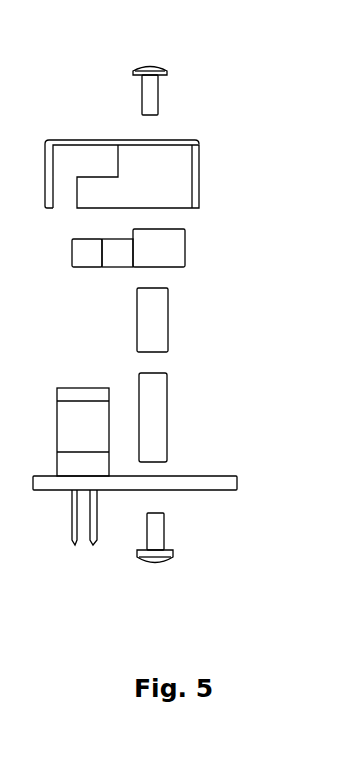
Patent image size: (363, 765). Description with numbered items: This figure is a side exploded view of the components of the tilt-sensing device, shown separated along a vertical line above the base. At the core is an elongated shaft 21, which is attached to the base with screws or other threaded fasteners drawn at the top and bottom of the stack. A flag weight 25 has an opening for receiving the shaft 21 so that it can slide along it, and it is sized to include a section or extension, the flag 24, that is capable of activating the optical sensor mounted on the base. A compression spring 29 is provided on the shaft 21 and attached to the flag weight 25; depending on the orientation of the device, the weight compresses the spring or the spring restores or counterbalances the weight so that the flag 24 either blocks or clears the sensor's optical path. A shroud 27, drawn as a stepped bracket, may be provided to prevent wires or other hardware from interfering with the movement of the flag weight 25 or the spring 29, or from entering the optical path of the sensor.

The elongated shaft 21 is at (155, 417).
The flag 24 is at (83, 257).
The flag weight 25 is at (175, 252).
The shroud 27 is at (178, 175).
The compression spring 29 is at (157, 323).